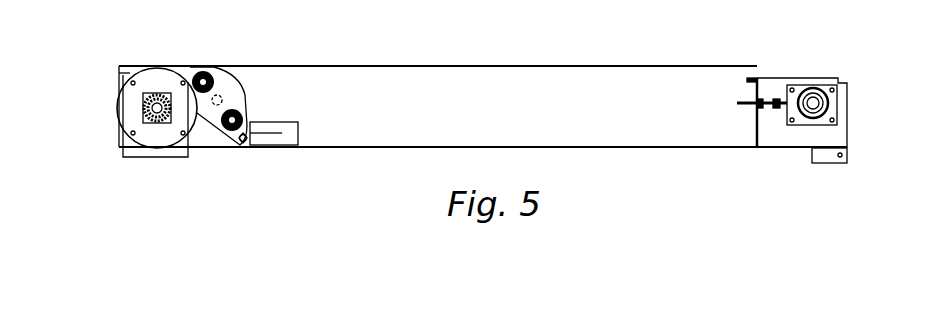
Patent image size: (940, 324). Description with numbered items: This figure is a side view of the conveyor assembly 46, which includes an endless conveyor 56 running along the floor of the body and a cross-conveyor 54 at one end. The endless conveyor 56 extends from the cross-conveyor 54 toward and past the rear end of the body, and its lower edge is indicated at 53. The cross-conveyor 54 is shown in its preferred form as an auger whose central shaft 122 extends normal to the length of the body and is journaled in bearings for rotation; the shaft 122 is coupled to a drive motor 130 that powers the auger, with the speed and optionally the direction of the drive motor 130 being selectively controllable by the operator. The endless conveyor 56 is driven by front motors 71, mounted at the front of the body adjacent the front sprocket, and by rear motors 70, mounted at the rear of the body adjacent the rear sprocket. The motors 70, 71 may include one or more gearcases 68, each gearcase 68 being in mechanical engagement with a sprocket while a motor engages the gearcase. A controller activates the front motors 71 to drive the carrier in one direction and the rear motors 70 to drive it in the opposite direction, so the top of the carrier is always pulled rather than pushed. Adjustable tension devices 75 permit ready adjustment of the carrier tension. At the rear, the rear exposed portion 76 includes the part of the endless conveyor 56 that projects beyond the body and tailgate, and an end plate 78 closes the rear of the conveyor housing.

The conveyor assembly 46 is at (411, 48).
The lower edge of housing 53 is at (648, 134).
The cross-conveyor 54 is at (157, 65).
The endless conveyor 56 is at (571, 58).
The gearcase 68 is at (210, 116).
The rear motors 70 is at (815, 98).
The front motors 71 is at (200, 66).
The adjustable tension devices 75 is at (771, 100).
The rear exposed portion 76 is at (803, 165).
The end plate 78 is at (757, 133).
The central shaft 122 is at (153, 113).
The drive motor 130 is at (150, 104).